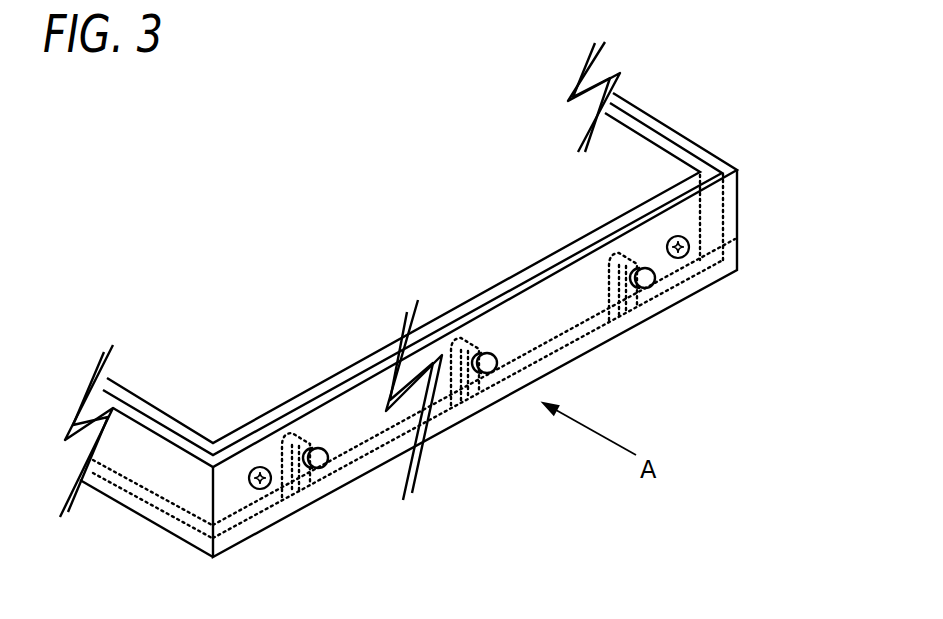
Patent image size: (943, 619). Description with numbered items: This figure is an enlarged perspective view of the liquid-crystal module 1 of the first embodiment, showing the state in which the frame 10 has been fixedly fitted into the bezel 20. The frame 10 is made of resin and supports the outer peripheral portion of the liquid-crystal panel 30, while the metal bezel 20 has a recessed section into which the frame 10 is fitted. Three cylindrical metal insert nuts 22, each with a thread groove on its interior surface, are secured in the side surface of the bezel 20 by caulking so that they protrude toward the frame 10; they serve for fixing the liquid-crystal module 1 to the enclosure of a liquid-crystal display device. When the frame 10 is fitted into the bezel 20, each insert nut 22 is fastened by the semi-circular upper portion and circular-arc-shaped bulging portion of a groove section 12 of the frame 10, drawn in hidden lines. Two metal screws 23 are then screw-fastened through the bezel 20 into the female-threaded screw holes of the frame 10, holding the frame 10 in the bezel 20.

The liquid-crystal module 1 is at (449, 298).
The frame 10 is at (672, 147).
The groove section 12 is at (312, 510).
The bezel 20 is at (732, 230).
The insert nut 22 is at (320, 460).
The screw 23 is at (264, 487).
The liquid-crystal panel 30 is at (303, 240).